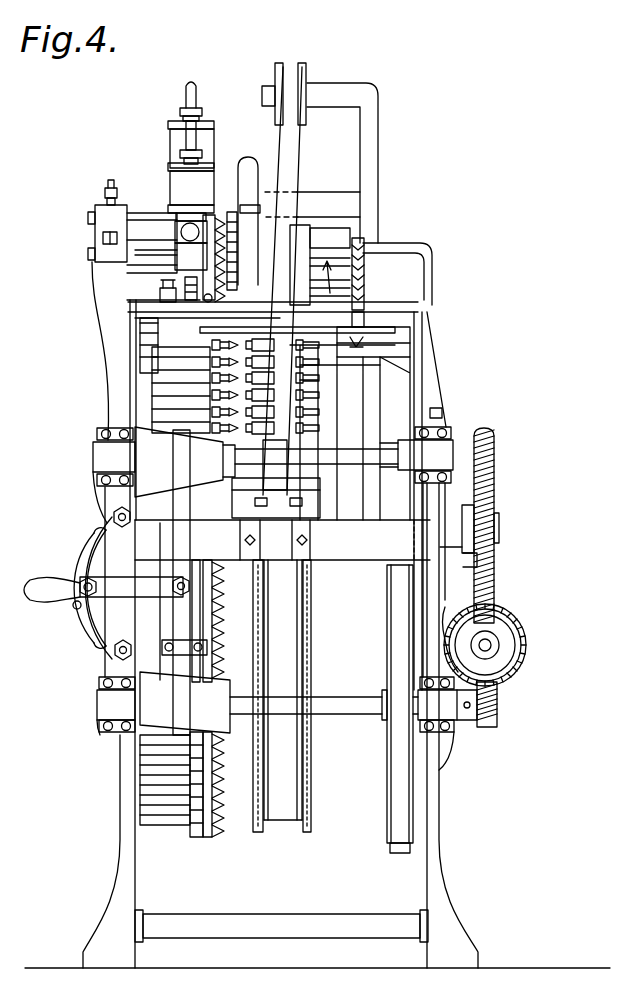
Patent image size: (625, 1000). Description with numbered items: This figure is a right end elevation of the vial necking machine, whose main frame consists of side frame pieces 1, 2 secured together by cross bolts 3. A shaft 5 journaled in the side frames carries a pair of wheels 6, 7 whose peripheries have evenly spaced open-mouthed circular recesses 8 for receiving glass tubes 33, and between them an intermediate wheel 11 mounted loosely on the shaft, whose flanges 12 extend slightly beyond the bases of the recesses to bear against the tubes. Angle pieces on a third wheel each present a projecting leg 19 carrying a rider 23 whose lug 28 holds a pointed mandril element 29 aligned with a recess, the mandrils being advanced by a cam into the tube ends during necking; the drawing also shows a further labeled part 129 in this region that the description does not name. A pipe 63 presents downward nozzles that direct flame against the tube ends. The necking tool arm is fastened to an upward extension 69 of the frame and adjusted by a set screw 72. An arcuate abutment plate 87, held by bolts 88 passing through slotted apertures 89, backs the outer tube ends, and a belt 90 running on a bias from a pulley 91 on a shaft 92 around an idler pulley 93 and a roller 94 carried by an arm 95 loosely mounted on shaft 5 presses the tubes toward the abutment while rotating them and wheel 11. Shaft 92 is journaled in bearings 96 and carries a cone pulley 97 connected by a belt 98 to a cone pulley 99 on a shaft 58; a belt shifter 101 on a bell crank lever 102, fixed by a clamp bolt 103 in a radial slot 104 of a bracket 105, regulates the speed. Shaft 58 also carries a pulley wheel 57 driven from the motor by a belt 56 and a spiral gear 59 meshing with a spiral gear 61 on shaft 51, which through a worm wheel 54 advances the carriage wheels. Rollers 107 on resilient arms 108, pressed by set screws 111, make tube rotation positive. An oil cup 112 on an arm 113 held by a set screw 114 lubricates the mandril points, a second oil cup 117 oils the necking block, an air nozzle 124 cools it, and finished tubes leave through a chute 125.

The side frame piece 1 is at (125, 840).
The side frame piece 2 is at (441, 542).
The tie rods or cross bolts 3 is at (282, 923).
The shaft 5 is at (462, 540).
The wheel 6 is at (308, 833).
The wheel 7 is at (260, 830).
The open-mouthed circular recesses 8 is at (255, 762).
The intermediate wheel 11 is at (287, 817).
The flanges 12 is at (298, 768).
The projecting leg 19 is at (133, 342).
The rider 23 is at (153, 372).
The lug 28 is at (198, 837).
The mandril elements 29 is at (223, 227).
The tubes 33 is at (265, 214).
The shaft 51 is at (491, 647).
The worm wheel 54 is at (496, 465).
The belt 56 is at (397, 850).
The pulley wheel 57 is at (388, 770).
The shaft 58 is at (340, 700).
The spiral gear 59 is at (497, 697).
The spiral gear 61 is at (507, 637).
The pipe 63 is at (250, 163).
The upward extension of the frame 69 is at (95, 238).
The set screw 72 is at (160, 297).
The arcuate abutment plate 87 is at (313, 233).
The bolts 88 is at (357, 348).
The slotted apertures 89 is at (383, 345).
The belt 90 is at (292, 141).
The pulley 91 is at (287, 435).
The shaft 92 is at (352, 458).
The idler pulley 93 is at (308, 74).
The roller 94 is at (297, 193).
The arm 95 is at (365, 168).
The bearings 96 is at (93, 458).
The cone pulley 97 is at (148, 442).
The belt 98 is at (190, 540).
The cone pulley 99 is at (213, 720).
The belt shifter 101 is at (187, 647).
The bell crank lever 102 is at (38, 577).
The clamp bolt 103 is at (75, 603).
The radial slot 104 is at (98, 533).
The bracket 105 is at (95, 640).
The rollers 107 is at (297, 352).
The resilient arms 108 is at (333, 265).
The set screws 111 is at (360, 293).
The oil cup 112 is at (203, 124).
The arm 113 is at (142, 210).
The set screw 114 is at (111, 186).
The oil cup 117 is at (203, 158).
The air nozzle 124 is at (212, 300).
The chute 125 is at (313, 520).
The rack 129 is at (226, 598).